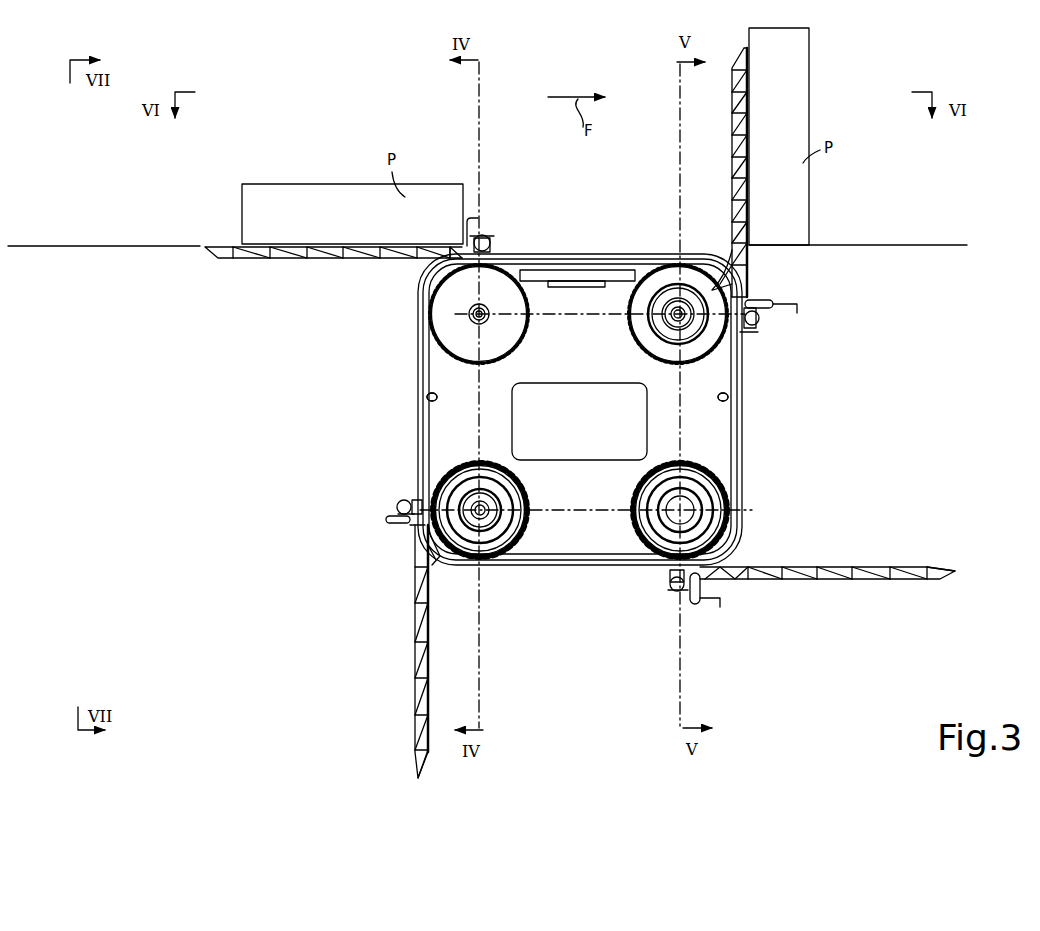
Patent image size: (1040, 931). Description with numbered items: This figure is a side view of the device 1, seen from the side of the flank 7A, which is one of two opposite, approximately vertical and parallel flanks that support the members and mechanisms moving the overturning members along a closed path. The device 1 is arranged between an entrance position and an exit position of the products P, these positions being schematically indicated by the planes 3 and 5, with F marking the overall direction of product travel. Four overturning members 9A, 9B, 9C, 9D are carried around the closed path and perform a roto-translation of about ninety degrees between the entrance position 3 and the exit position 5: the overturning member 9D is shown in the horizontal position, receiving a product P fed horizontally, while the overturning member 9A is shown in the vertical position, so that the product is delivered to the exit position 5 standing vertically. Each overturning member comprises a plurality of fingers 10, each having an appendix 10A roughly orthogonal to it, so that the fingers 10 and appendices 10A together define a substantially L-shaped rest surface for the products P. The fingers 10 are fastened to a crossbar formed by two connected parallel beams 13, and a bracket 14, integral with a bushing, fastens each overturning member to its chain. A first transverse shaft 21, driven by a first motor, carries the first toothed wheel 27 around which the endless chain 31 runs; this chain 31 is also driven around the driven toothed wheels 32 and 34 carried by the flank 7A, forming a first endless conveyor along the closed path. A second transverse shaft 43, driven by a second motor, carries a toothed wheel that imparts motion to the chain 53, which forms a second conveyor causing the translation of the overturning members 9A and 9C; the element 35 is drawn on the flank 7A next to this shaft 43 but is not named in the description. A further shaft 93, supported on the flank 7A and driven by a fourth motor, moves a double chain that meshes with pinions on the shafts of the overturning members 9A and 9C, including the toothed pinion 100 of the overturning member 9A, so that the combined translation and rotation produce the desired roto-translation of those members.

The device 1 is at (303, 558).
The plane 3 is at (113, 246).
The plane 5 is at (880, 246).
The flank 7A is at (575, 300).
The overturning member 9A is at (730, 141).
The overturning member 9B is at (824, 558).
The overturning member 9C is at (408, 629).
The overturning member 9D is at (306, 238).
The finger 10 is at (340, 260).
The appendix 10A is at (470, 222).
The beam 13 is at (490, 233).
The bracket 14 is at (751, 333).
The first transverse shaft 21 is at (468, 314).
The first toothed wheel 27 is at (440, 326).
The chain 31 is at (428, 397).
The driven toothed wheel 32 is at (500, 462).
The driven toothed wheel 34 is at (720, 455).
The gear 35 is at (632, 325).
The transverse shaft 43 is at (685, 308).
The chain 53 is at (577, 397).
The shaft 93 is at (488, 530).
The toothed pinion 100 is at (410, 530).